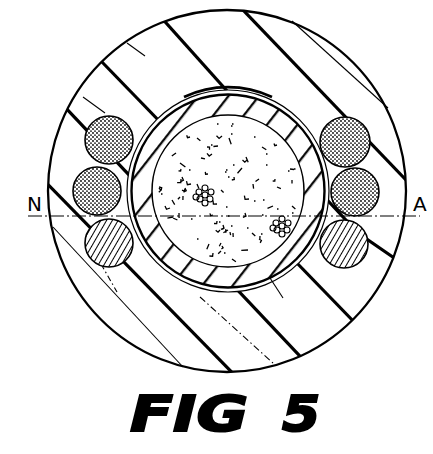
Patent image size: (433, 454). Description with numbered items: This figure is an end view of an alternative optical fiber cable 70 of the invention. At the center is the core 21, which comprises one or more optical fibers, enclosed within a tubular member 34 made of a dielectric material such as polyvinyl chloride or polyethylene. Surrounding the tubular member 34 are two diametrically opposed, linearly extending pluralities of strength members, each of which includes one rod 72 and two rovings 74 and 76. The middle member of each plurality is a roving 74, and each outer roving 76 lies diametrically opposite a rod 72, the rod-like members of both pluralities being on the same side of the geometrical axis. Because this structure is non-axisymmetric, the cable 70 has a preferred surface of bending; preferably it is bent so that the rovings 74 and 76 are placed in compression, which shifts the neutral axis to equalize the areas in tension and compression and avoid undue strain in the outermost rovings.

The cable 70 is at (350, 60).
The rod 72 is at (93, 261).
The roving 74 is at (75, 181).
The roving 76 is at (92, 124).
The core 21 is at (180, 120).
The tubular member 34 is at (279, 280).